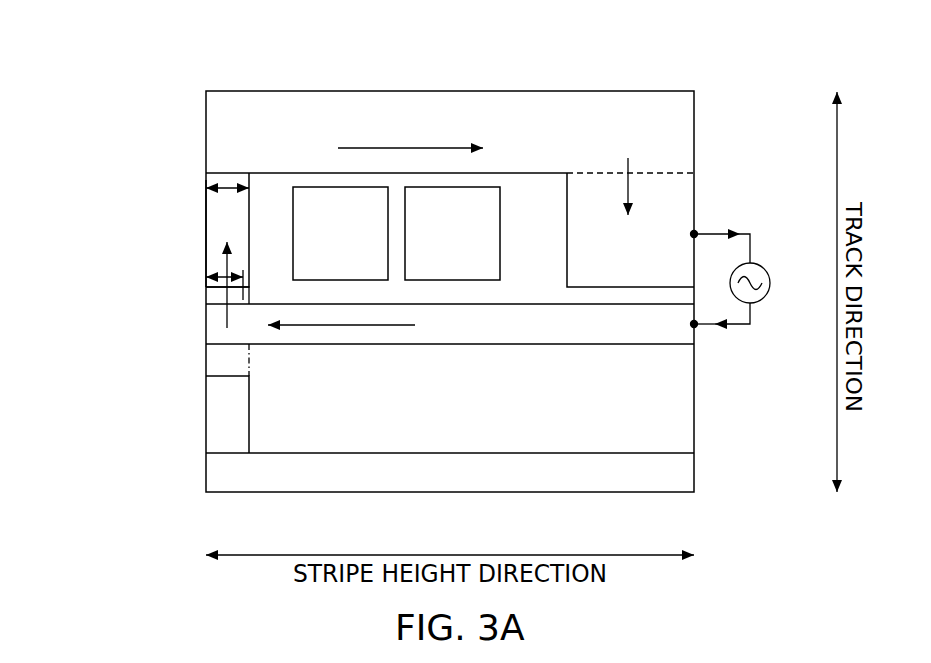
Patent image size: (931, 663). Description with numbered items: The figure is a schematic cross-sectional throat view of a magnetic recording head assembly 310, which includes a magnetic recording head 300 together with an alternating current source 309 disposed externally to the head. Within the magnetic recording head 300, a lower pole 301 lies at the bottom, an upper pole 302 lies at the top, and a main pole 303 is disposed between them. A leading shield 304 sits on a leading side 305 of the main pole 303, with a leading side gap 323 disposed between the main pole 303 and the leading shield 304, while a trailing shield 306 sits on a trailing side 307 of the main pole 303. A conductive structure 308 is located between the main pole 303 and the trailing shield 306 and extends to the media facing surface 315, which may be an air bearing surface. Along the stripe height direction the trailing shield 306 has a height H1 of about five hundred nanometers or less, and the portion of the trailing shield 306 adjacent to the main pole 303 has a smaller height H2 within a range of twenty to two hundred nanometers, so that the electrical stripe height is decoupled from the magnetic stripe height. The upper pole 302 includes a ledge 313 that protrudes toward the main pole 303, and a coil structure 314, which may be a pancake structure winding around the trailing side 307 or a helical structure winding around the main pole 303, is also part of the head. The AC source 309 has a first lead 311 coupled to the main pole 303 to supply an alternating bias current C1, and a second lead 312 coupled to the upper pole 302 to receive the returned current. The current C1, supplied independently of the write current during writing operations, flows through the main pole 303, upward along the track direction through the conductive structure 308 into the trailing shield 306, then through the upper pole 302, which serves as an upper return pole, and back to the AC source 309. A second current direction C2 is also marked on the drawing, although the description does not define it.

The magnetic recording head 300 is at (192, 132).
The lower pole 301 is at (450, 469).
The upper pole 302 is at (450, 139).
The main pole 303 is at (450, 324).
The leading shield 304 is at (222, 427).
The leading side 305 is at (272, 353).
The trailing shield 306 is at (225, 207).
The trailing side 307 is at (273, 300).
The conductive structure 308 is at (213, 296).
The alternating current (AC) source 309 is at (765, 298).
The magnetic recording head assembly 310 is at (152, 50).
The first lead 311 is at (700, 328).
The second lead 312 is at (700, 232).
The ledge 313 is at (630, 222).
The coil structure 314 is at (396, 233).
The media facing surface (MFS) 315 is at (207, 238).
The leading side gap 323 is at (227, 362).
The height of the trailing shield H1 is at (228, 187).
The height of the trailing shield portion H2 is at (220, 277).
The current C1 is at (348, 148).
The second current direction C2 is at (228, 315).